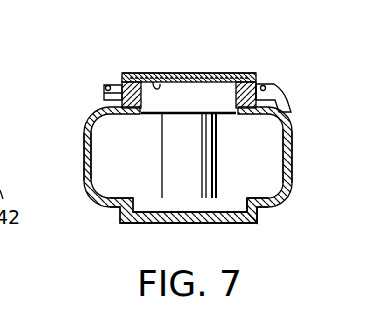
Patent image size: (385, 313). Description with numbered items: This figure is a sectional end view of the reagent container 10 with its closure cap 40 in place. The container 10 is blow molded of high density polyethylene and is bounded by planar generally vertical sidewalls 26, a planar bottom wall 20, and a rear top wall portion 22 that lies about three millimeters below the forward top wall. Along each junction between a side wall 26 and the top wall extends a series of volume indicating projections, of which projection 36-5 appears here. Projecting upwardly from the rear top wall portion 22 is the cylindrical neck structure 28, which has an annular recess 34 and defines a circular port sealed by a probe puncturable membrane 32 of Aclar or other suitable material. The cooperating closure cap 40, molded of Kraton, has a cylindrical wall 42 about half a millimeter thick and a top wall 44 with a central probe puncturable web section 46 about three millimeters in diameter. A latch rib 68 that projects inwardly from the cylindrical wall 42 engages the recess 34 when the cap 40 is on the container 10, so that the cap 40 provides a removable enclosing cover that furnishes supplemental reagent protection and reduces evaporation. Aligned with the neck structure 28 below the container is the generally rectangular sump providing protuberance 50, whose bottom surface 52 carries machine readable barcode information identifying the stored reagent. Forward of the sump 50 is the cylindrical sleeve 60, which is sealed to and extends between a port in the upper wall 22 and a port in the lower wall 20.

The reagent container 10 is at (300, 138).
The planar bottom wall 20 is at (275, 207).
The rear top wall portion 22 is at (274, 101).
The sidewalls 26 is at (84, 148).
The cylindrical neck structure 28 is at (241, 71).
The probe puncturable membrane 32 is at (157, 86).
The annular recess 34 is at (258, 86).
The volume indicating projection 36-5 is at (105, 87).
The closure cap 40 is at (161, 63).
The cylindrical wall 42 is at (120, 82).
The top wall 44 is at (137, 72).
The probe puncturable web section 46 is at (193, 72).
The sump providing protuberance 50 is at (256, 219).
The bottom surface 52 is at (224, 224).
The cylindrical sleeve 60 is at (162, 178).
The latch rib 68 is at (131, 99).